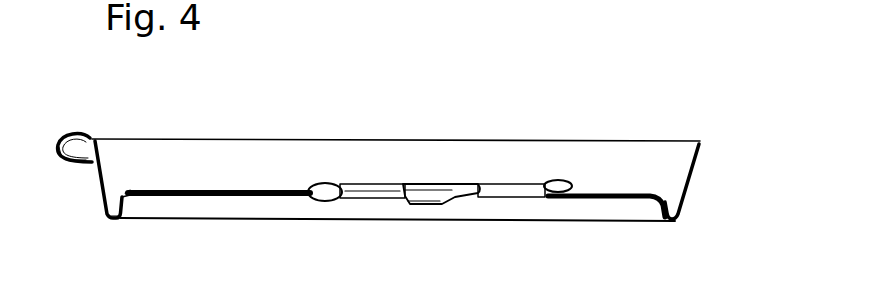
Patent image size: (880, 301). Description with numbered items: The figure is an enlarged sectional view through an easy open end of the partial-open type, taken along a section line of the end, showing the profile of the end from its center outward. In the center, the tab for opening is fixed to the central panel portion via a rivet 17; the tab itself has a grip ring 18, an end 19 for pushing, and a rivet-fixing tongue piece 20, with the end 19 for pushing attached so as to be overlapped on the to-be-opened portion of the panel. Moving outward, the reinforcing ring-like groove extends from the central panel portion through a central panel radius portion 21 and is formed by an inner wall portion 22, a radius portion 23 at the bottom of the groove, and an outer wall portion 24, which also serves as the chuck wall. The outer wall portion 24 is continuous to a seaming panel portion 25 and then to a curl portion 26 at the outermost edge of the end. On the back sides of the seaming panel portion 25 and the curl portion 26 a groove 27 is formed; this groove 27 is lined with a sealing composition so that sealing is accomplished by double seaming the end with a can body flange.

The rivet 17 is at (403, 183).
The grip ring 18 is at (560, 180).
The end for pushing 19 is at (323, 183).
The rivet-fixing tongue piece 20 is at (418, 206).
The central panel radius portion 21 is at (125, 200).
The inner wall portion 22 is at (123, 204).
The radius portion 23 is at (109, 218).
The outer wall portion (chuck wall) 24 is at (95, 210).
The seaming panel portion 25 is at (72, 135).
The curl portion 26 is at (57, 150).
The groove 27 is at (73, 168).